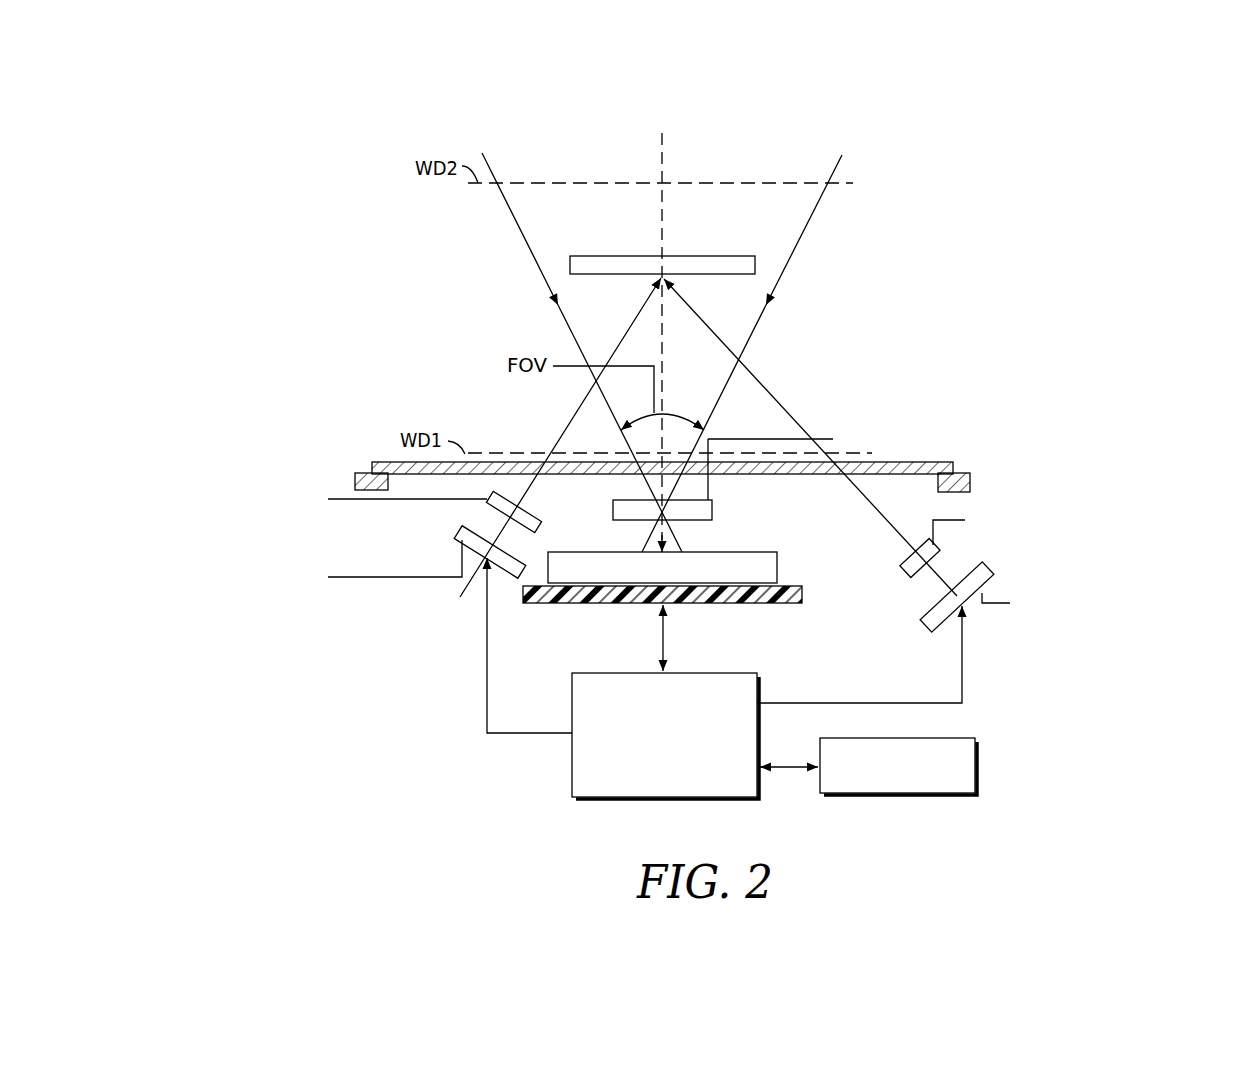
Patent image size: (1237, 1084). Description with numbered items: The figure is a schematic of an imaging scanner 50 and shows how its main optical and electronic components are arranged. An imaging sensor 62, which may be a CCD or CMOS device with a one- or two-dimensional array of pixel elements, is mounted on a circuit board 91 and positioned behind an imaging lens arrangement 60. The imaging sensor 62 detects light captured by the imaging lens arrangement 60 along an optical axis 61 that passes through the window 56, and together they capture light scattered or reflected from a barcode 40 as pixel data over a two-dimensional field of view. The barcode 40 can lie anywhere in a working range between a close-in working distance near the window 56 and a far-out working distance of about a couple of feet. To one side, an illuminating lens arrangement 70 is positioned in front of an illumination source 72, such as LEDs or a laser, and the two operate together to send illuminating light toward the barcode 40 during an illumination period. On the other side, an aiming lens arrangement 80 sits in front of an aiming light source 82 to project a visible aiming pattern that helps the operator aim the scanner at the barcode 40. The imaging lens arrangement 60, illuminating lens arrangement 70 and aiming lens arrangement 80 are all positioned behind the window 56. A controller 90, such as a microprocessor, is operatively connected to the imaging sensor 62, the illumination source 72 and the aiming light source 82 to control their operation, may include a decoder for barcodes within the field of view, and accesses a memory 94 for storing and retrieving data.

The barcode 40 is at (731, 256).
The imaging scanner 50 is at (836, 306).
The window 56 is at (383, 460).
The imaging lens arrangement 60 is at (612, 511).
The optical axis 61 is at (663, 157).
The imaging sensor 62 is at (778, 567).
The illuminating lens arrangement 70 is at (1044, 487).
The illumination source 72 is at (1157, 603).
The aiming lens arrangement 80 is at (257, 474).
The aiming light source 82 is at (251, 615).
The controller 90 is at (572, 699).
The circuit board 91 is at (743, 605).
The memory 94 is at (978, 767).